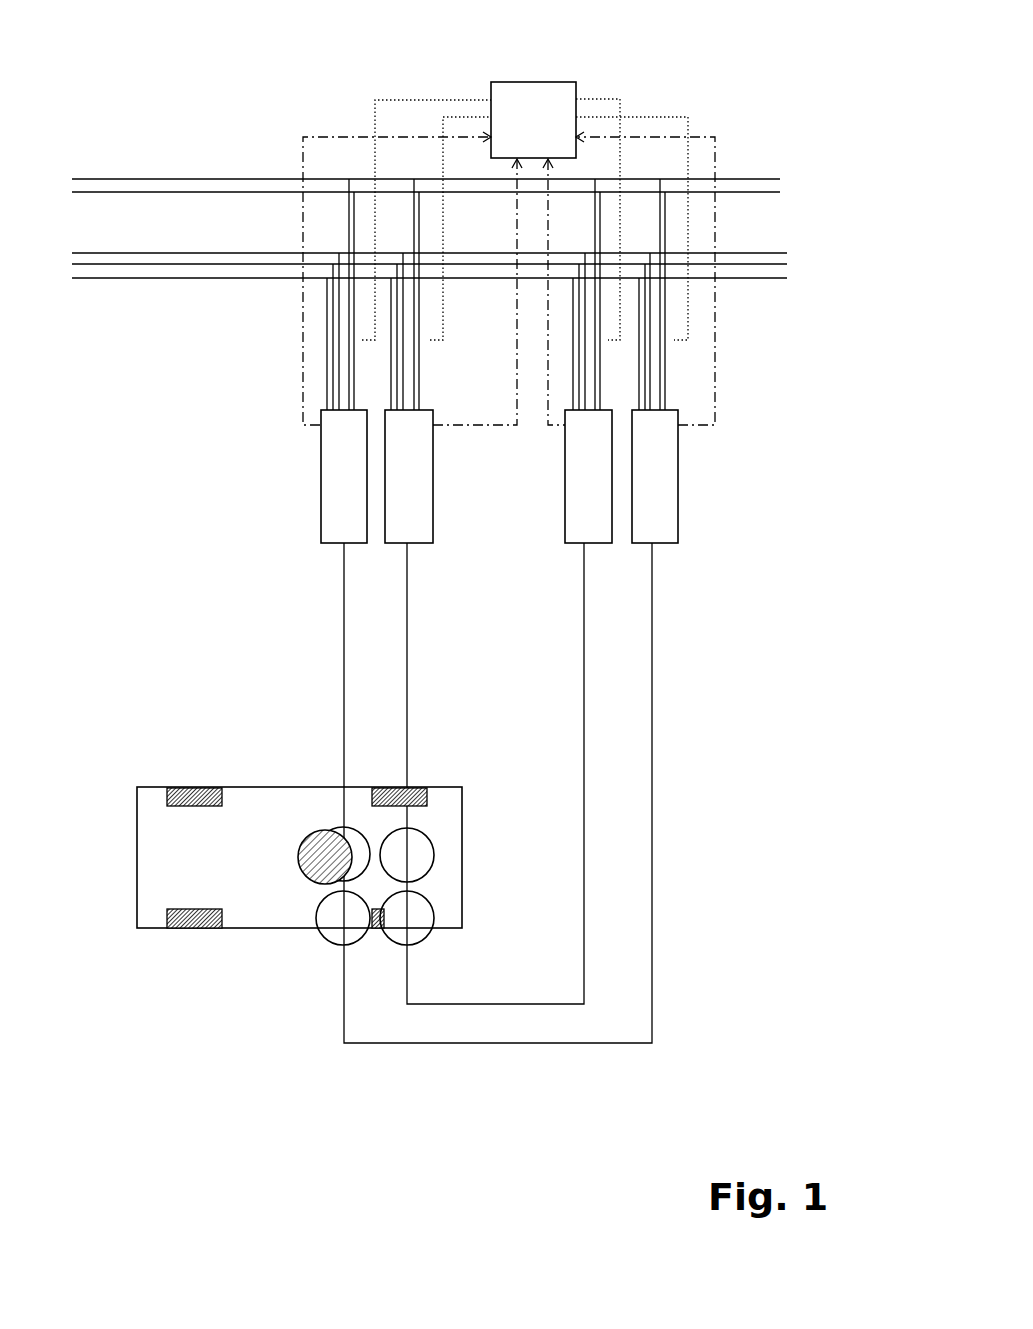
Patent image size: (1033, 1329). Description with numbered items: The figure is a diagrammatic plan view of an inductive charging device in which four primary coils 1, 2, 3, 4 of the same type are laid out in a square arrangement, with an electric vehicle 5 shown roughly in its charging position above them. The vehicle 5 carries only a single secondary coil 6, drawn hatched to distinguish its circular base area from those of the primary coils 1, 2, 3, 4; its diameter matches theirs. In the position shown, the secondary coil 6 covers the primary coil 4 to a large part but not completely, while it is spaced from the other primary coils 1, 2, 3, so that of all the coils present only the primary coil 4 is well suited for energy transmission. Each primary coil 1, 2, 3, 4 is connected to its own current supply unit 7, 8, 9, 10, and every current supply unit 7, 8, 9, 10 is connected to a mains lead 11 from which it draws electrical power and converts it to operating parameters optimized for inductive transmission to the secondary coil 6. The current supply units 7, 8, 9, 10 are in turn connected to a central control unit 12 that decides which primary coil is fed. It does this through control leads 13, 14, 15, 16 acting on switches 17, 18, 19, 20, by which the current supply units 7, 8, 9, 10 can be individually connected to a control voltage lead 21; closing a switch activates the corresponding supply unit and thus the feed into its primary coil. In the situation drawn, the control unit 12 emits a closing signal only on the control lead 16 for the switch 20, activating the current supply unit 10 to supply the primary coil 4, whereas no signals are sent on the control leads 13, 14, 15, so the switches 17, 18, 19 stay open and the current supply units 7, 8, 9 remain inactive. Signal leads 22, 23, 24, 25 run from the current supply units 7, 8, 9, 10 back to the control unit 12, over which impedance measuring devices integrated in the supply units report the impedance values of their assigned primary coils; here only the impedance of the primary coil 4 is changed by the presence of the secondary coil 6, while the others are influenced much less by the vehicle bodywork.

The primary coil 1 is at (425, 850).
The primary coil 2 is at (425, 933).
The primary coil 3 is at (325, 937).
The primary coil 4 is at (352, 837).
The electric vehicle 5 is at (252, 813).
The secondary coil 6 is at (317, 835).
The current supply unit 7 is at (409, 476).
The current supply unit 8 is at (588, 476).
The current supply unit 9 is at (655, 476).
The current supply unit 10 is at (344, 476).
The mains lead 11 is at (792, 246).
The central control unit 12 is at (533, 120).
The control lead 13 is at (462, 118).
The control lead 14 is at (602, 100).
The control lead 15 is at (653, 118).
The control lead 16 is at (410, 102).
The switch 17 is at (430, 322).
The switch 18 is at (609, 325).
The switch 19 is at (673, 323).
The switch 20 is at (365, 322).
The control voltage lead 21 is at (792, 172).
The signal lead 22 is at (457, 427).
The signal lead 23 is at (560, 426).
The signal lead 24 is at (700, 427).
The signal lead 25 is at (312, 428).